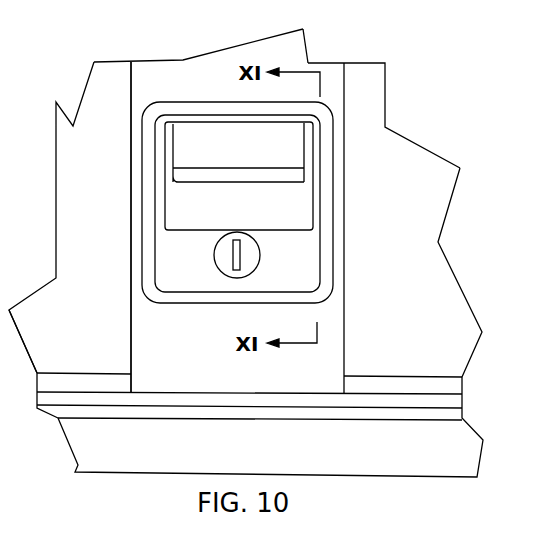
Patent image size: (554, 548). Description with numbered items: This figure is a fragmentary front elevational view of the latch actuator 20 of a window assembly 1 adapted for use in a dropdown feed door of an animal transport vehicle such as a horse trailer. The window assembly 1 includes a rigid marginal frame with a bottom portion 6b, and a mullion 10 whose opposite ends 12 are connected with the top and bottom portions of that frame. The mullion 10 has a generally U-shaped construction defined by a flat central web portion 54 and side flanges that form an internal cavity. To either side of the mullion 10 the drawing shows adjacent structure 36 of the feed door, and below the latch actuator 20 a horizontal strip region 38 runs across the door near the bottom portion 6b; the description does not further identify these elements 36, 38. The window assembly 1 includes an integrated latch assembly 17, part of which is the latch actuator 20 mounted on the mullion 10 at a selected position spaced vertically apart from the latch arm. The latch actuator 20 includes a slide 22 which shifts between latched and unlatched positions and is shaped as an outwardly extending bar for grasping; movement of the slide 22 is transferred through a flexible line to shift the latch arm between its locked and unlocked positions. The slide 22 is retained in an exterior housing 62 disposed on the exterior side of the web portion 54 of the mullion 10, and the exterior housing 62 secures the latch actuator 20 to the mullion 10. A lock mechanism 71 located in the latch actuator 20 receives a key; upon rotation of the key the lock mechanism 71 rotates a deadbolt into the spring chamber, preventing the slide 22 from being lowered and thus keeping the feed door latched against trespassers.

The window assembly 1 is at (63, 462).
The bottom portion of frame 6b is at (358, 460).
The mullion 10 is at (162, 58).
The opposite ends of mullion 12 is at (328, 377).
The latch assembly 17 is at (145, 296).
The latch actuator 20 is at (333, 213).
The slide 22 is at (184, 182).
The side wall 36 is at (72, 229).
The sill strips 38 is at (463, 400).
The flat central web portion 54 is at (300, 42).
The exterior housing 62 is at (323, 269).
The lock mechanism 71 is at (233, 260).